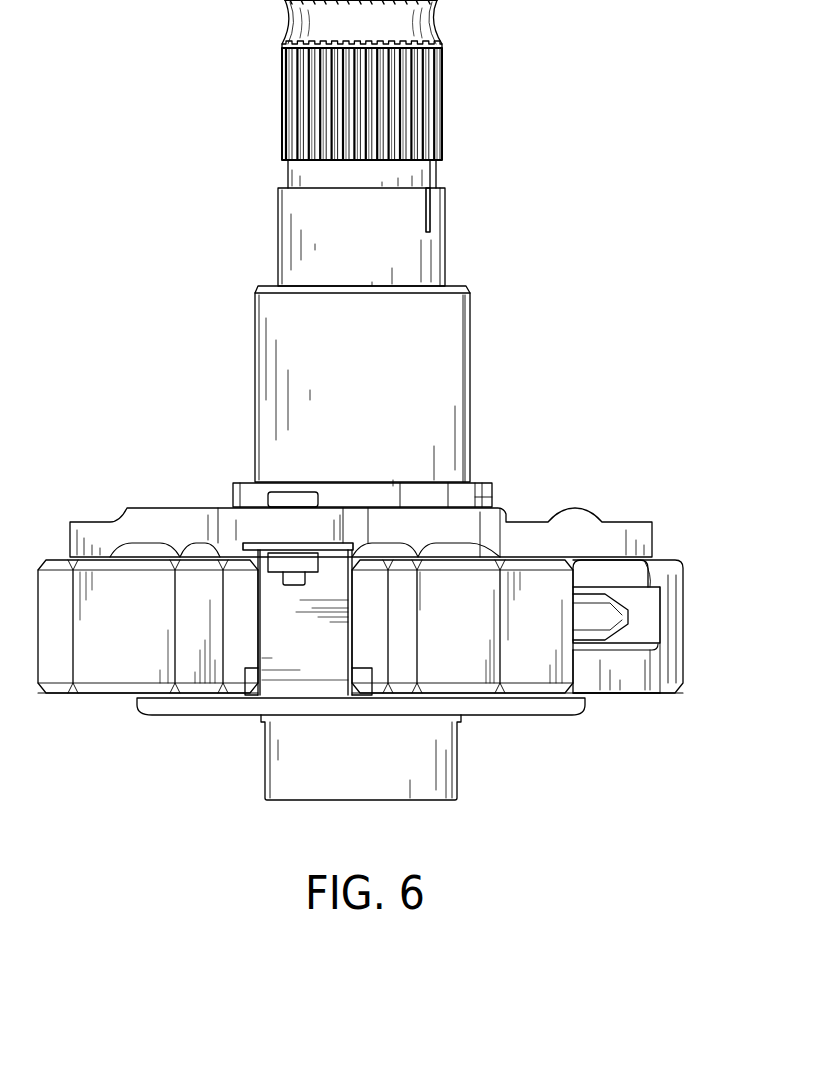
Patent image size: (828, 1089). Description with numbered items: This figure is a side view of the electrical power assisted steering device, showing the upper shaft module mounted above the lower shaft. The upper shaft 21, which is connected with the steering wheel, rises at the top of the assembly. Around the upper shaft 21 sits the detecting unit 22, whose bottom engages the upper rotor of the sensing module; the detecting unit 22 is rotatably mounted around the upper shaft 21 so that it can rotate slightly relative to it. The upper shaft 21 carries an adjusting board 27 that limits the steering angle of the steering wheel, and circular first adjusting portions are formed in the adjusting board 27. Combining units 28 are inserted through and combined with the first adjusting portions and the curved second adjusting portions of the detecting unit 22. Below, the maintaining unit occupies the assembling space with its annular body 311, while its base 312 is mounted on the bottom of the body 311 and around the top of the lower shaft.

The upper shaft 21 is at (455, 357).
The detecting unit 22 is at (282, 675).
The adjusting board 27 is at (575, 535).
The combining unit 28 is at (290, 500).
The body 311 is at (675, 642).
The base 312 is at (640, 675).